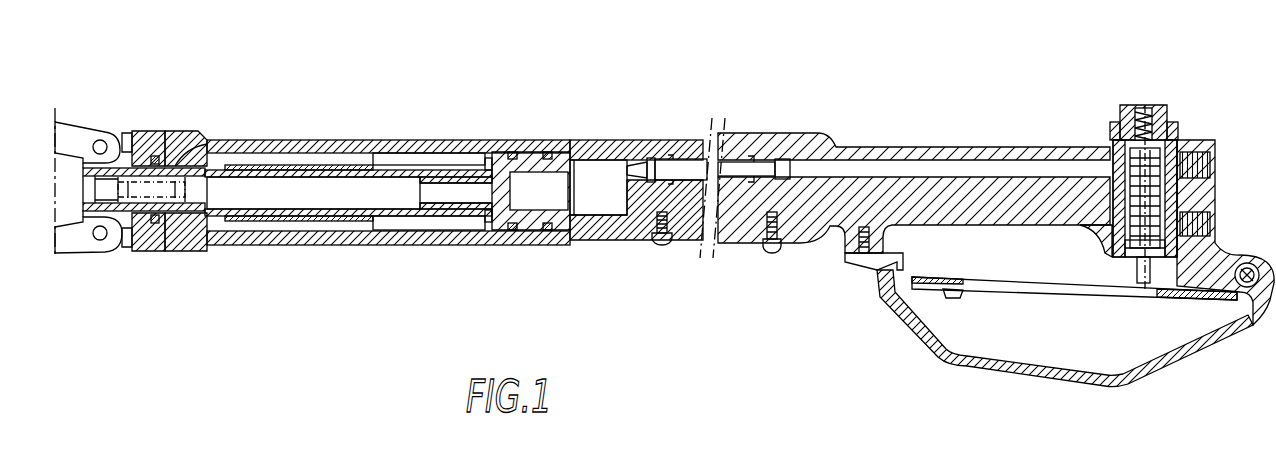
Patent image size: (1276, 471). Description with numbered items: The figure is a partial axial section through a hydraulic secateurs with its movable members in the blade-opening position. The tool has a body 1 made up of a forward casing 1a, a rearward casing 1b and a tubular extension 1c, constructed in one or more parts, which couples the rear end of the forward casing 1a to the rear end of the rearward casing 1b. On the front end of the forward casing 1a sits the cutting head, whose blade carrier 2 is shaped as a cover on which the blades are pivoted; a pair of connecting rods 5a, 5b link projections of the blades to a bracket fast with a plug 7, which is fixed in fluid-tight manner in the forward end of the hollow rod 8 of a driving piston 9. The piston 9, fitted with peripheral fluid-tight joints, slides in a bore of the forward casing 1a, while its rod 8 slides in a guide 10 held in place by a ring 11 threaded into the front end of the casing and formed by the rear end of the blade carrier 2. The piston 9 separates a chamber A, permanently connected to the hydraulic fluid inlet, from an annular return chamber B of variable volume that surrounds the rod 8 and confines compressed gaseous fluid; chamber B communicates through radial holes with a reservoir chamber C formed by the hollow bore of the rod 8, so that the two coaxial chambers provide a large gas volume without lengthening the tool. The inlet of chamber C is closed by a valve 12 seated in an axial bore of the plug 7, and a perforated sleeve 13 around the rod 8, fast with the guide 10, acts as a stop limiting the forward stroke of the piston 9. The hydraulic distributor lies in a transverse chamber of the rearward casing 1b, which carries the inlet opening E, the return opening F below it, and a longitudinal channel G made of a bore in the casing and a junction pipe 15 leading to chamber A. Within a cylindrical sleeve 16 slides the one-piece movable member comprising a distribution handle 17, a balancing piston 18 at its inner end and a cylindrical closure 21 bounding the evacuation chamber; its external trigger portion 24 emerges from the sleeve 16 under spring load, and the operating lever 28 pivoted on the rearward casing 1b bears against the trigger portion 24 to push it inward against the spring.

The body 1 is at (360, 281).
The forward casing 1a is at (368, 145).
The rearward casing 1b is at (850, 157).
The tubular extension 1c is at (647, 140).
The blade carrier 2 is at (67, 188).
The connecting rod 5a is at (83, 138).
The connecting rod 5b is at (77, 250).
The plug 7 is at (115, 172).
The hollow rod 8 is at (465, 165).
The driving piston 9 is at (533, 165).
The guide 10 is at (205, 152).
The ring 11 is at (212, 140).
The valve 12 is at (148, 193).
The perforated sleeve 13 is at (417, 165).
The junction pipe 15 is at (682, 157).
The cylindrical sleeve 16 is at (1193, 163).
The distribution handle 17 is at (1133, 207).
The balancing piston 18 is at (1163, 163).
The cylindrical closure 21 is at (1155, 247).
The trigger portion 24 is at (1140, 267).
The operating lever 28 is at (1020, 288).
The chamber A is at (597, 182).
The annular return chamber B is at (497, 165).
The reservoir chamber C is at (273, 193).
The inlet opening E is at (1195, 142).
The return opening F is at (1202, 228).
The longitudinal channel G is at (793, 170).